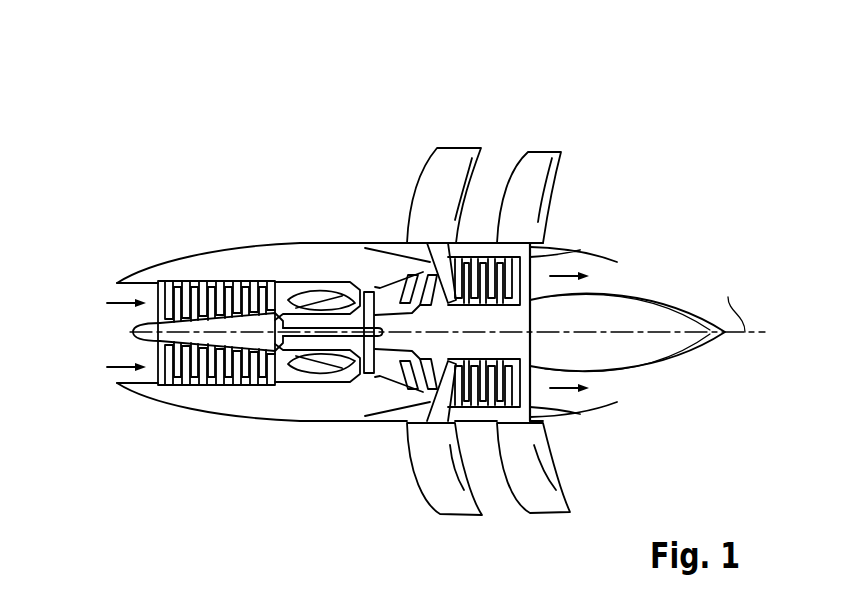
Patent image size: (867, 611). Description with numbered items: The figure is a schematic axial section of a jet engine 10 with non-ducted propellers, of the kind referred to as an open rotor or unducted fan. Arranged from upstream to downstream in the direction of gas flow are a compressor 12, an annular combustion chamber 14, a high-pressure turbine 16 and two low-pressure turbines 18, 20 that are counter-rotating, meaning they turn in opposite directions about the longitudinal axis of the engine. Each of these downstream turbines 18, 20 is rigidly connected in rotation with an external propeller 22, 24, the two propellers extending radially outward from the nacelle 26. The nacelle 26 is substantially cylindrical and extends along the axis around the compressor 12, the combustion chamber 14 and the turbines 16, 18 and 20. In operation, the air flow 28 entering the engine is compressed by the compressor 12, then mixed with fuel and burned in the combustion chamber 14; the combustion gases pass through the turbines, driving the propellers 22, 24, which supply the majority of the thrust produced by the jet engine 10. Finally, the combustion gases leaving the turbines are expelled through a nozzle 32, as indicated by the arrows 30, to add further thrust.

The jet engine 10 is at (420, 280).
The compressor 12 is at (177, 395).
The annular combustion chamber 14 is at (321, 390).
The high-pressure turbine 16 is at (365, 390).
The low-pressure turbine 18 is at (386, 276).
The low-pressure turbine 20 is at (478, 313).
The external propeller 22 is at (468, 142).
The external propeller 24 is at (556, 140).
The nacelle 26 is at (305, 243).
The air flow 28 is at (120, 305).
The arrows 30 is at (555, 286).
The nozzle 32 is at (576, 248).